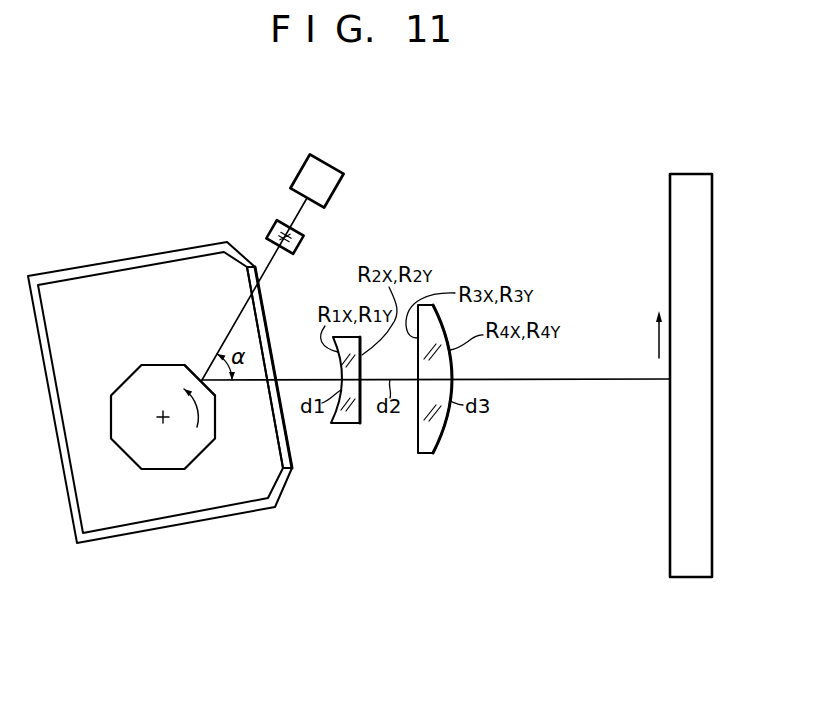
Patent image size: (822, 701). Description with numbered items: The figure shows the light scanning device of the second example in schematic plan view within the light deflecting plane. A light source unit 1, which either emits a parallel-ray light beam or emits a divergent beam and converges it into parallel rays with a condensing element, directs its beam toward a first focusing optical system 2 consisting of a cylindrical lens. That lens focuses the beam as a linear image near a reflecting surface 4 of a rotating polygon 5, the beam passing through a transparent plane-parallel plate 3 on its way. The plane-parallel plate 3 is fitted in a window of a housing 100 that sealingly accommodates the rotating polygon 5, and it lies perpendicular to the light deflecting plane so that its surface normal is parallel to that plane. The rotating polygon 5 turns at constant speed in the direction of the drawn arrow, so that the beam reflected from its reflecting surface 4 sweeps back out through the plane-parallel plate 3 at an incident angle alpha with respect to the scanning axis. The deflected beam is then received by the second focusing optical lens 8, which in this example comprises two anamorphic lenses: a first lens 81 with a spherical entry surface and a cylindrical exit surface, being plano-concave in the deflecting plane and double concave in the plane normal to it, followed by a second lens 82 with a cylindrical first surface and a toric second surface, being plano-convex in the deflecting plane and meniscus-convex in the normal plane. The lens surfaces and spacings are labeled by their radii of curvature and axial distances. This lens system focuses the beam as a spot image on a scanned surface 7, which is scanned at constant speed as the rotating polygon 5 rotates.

The light source unit 1 is at (340, 191).
The first focusing optical system 2 is at (305, 238).
The plane-parallel plate 3 is at (264, 303).
The reflecting surface 4 is at (199, 372).
The rotating polygon 5 is at (163, 468).
The scanned surface 7 is at (676, 201).
The second focusing optical lens 8 is at (402, 402).
The first lens 81 is at (352, 423).
The second lens 82 is at (453, 382).
The housing 100 is at (210, 517).